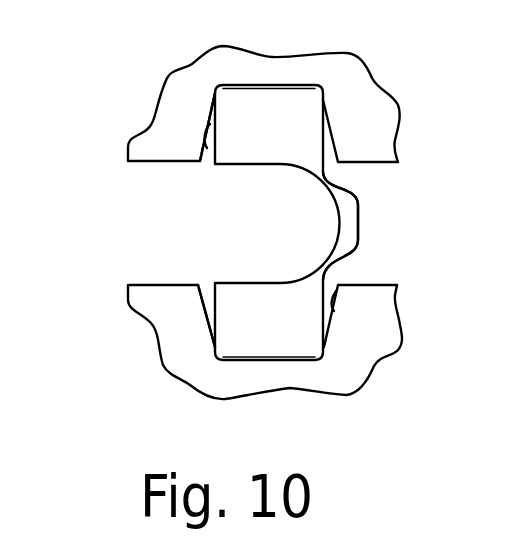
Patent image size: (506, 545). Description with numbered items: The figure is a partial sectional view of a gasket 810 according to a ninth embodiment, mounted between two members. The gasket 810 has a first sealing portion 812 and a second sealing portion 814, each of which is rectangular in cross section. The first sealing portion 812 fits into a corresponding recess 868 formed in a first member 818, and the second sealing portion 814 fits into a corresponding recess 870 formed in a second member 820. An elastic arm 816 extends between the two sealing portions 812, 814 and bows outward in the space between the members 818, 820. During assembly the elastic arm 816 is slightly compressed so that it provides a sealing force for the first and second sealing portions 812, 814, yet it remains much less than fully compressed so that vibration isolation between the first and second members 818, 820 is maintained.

The gasket 810 is at (180, 213).
The first sealing portion 812 is at (196, 174).
The second sealing portion 814 is at (198, 269).
The elastic arm 816 is at (360, 217).
The first member 818 is at (363, 63).
The second member 820 is at (194, 386).
The recess 868 is at (210, 124).
The recess 870 is at (334, 311).